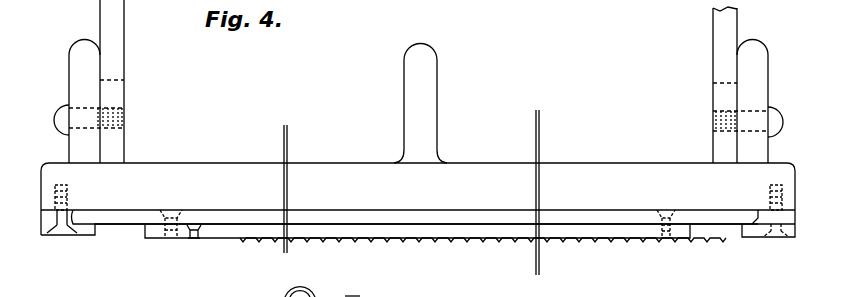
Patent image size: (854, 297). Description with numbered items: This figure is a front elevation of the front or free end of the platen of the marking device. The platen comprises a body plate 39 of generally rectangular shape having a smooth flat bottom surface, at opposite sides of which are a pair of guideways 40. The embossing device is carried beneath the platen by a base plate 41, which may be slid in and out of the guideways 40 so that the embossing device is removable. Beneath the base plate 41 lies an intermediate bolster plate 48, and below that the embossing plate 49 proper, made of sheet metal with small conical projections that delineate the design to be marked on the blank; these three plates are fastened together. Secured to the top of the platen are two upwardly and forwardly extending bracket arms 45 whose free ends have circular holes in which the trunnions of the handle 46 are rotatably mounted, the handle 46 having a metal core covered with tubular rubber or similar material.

The body plate 39 is at (418, 192).
The guideways 40 is at (73, 212).
The base plate 41 is at (730, 218).
The bracket arms 45 is at (124, 55).
The handle 46 is at (292, 292).
The intermediate bolster plate 48 is at (690, 238).
The embossing plate 49 is at (672, 240).